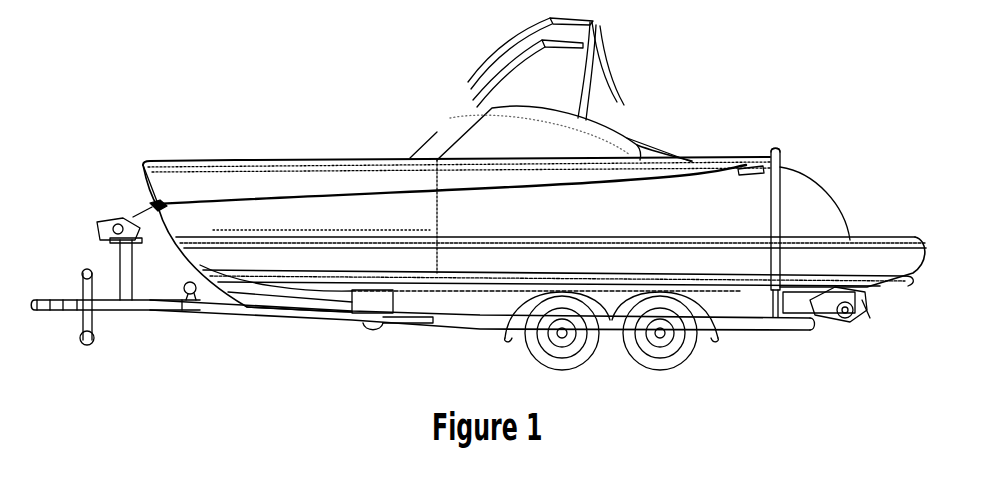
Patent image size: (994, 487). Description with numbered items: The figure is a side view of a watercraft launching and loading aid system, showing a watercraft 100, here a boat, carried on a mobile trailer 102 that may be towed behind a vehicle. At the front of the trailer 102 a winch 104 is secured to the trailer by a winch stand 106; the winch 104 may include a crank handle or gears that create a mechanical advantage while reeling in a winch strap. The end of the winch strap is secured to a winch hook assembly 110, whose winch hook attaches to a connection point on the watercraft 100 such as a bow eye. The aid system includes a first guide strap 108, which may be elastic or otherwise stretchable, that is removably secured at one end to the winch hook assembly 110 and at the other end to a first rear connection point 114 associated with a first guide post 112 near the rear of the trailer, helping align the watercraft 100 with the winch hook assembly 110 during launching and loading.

The watercraft 100 is at (295, 157).
The mobile trailer 102 is at (323, 322).
The winch 104 is at (133, 217).
The winch stand 106 is at (118, 263).
The first guide strap 108 is at (345, 195).
The winch hook assembly 110 is at (138, 194).
The first guide post 112 is at (781, 218).
The first rear connection point 114 is at (786, 151).